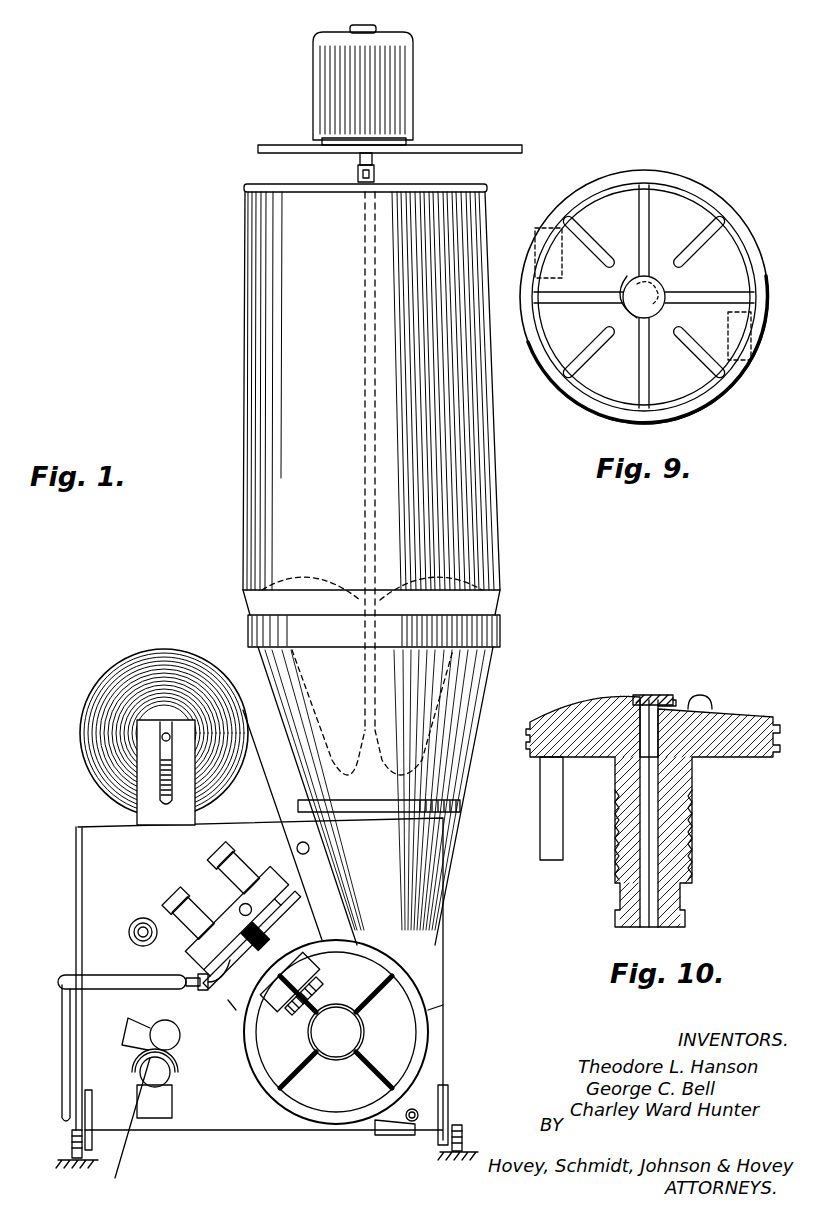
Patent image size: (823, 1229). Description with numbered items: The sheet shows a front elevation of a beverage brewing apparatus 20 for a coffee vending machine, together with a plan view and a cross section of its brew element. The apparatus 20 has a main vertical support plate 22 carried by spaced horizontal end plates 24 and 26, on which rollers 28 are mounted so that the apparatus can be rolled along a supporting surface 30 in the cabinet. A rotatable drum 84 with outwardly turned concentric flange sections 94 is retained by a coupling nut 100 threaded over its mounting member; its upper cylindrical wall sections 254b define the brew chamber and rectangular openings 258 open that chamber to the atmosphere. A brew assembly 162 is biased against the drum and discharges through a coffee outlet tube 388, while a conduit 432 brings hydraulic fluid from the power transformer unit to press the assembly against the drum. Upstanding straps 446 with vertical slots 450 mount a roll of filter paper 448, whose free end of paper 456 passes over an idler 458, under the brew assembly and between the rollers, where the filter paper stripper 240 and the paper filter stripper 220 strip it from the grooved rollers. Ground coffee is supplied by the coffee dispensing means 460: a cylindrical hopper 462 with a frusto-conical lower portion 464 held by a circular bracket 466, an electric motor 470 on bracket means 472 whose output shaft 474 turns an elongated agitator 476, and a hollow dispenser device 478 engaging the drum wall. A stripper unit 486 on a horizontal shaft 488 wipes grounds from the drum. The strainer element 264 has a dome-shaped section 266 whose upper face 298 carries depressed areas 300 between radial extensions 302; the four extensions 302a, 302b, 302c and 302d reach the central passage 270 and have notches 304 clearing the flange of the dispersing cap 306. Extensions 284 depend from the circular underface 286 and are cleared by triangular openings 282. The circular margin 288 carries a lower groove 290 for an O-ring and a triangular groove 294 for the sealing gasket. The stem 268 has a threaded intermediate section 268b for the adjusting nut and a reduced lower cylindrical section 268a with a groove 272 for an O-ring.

In FIG. 1, the electric motor 470 is at (413, 74).
In FIG. 1, the bracket means 472 is at (447, 153).
In FIG. 1, the output shaft 474 is at (372, 160).
In FIG. 1, the elongated agitator 476 is at (368, 295).
In FIG. 1, the coffee dispensing means 460 is at (499, 512).
In FIG. 1, the hopper 462 is at (243, 508).
In FIG. 1, the circular bracket 466 is at (250, 632).
In FIG. 1, the frusto-conical lower portion 464 is at (490, 660).
In FIG. 1, the hollow dispenser device 478 is at (413, 876).
In FIG. 1, the apparatus 20 is at (447, 913).
In FIG. 1, the main vertical support plate 22 is at (432, 957).
In FIG. 1, the drum 84 is at (428, 1010).
In FIG. 1, the flange sections 94 is at (425, 1045).
In FIG. 1, the end plate 26 is at (448, 1092).
In FIG. 1, the rollers 28 is at (462, 1135).
In FIG. 1, the supporting surface 30 is at (440, 1158).
In FIG. 1, the end plate 24 is at (70, 1127).
In FIG. 1, the stripper unit 486 is at (393, 1135).
In FIG. 1, the horizontal shaft 488 is at (418, 1100).
In FIG. 1, the coupling nut 100 is at (330, 1058).
In FIG. 1, the upper cylindrical wall sections 254b is at (315, 968).
In FIG. 1, the rectangular openings 258 is at (322, 990).
In FIG. 1, the roll of filter paper 448 is at (140, 655).
In FIG. 1, the upstanding straps 446 is at (140, 797).
In FIG. 1, the vertical slots 450 is at (165, 800).
In FIG. 1, the paper 456 is at (262, 756).
In FIG. 1, the idler 458 is at (309, 850).
In FIG. 1, the brew assembly 162 is at (280, 870).
In FIG. 1, the coffee outlet tube 388 is at (228, 1020).
In FIG. 1, the conduit 432 is at (115, 977).
In FIG. 1, the filter paper stripper 240 is at (150, 1015).
In FIG. 1, the paper filter stripper 220 is at (178, 1105).
In FIG. 9, the upper face 298 is at (720, 392).
In FIG. 10, the upper face 298 is at (555, 716).
In FIG. 9, the depressed areas 300 is at (585, 372).
In FIG. 10, the depressed areas 300 is at (704, 695).
In FIG. 9, the notches 304 is at (653, 312).
In FIG. 10, the notches 304 is at (648, 695).
In FIG. 9, the dispersing cap 306 is at (641, 312).
In FIG. 10, the dispersing cap 306 is at (672, 697).
In FIG. 9, the extensions 302 is at (595, 340).
In FIG. 10, the extensions 302 is at (730, 712).
In FIG. 9, the extension 302a is at (645, 210).
In FIG. 9, the extension 302b is at (565, 295).
In FIG. 9, the extension 302c is at (648, 368).
In FIG. 9, the extension 302d is at (692, 298).
In FIG. 9, the triangular openings 282 is at (548, 226).
In FIG. 10, the strainer element 264 is at (610, 790).
In FIG. 10, the dome-shaped section 266 is at (585, 702).
In FIG. 10, the triangular groove 294 is at (530, 722).
In FIG. 10, the circular margin 288 is at (528, 740).
In FIG. 10, the lower groove 290 is at (530, 757).
In FIG. 10, the circular underface 286 is at (568, 760).
In FIG. 10, the extensions 284 is at (545, 805).
In FIG. 10, the stem 268 is at (680, 775).
In FIG. 10, the intermediate section 268b is at (690, 822).
In FIG. 10, the passage 270 is at (690, 843).
In FIG. 10, the lower cylindrical section 268a is at (682, 892).
In FIG. 10, the groove 272 is at (684, 912).